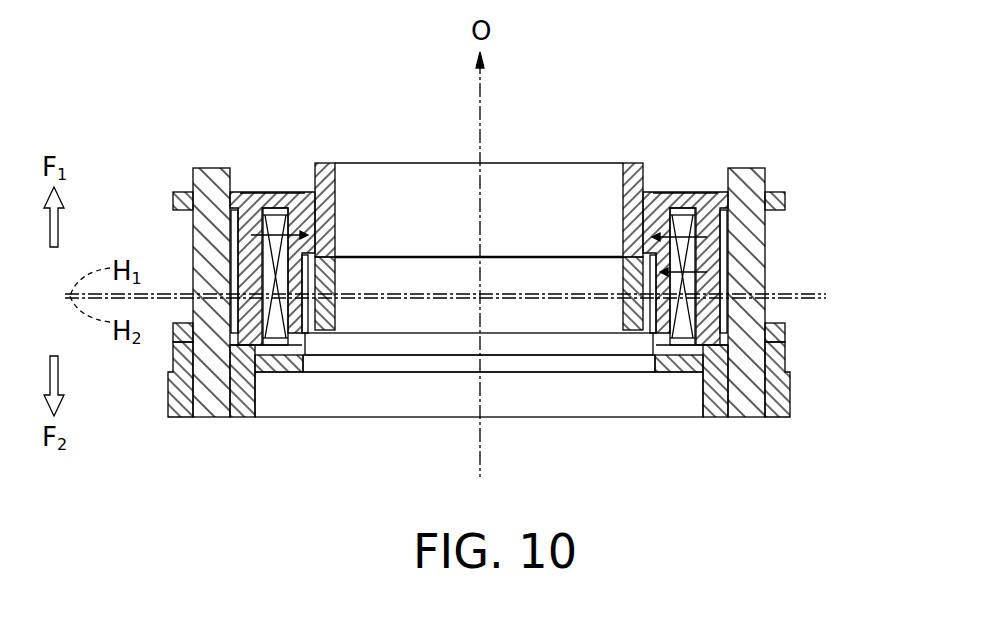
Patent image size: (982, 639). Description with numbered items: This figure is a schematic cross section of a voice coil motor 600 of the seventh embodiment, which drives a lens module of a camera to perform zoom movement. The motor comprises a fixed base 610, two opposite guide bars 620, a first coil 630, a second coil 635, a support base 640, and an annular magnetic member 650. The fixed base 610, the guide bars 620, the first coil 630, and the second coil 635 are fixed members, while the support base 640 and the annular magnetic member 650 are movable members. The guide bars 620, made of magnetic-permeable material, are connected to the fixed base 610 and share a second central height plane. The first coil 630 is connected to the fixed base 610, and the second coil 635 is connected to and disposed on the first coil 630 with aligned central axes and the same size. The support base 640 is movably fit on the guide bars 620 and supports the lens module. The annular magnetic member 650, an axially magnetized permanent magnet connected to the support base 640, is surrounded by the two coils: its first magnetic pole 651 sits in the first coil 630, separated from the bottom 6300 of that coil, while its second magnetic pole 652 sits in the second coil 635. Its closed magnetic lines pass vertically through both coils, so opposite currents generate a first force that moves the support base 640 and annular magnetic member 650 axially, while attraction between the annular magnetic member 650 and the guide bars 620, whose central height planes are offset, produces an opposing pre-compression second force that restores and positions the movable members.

The voice coil motor 600 is at (118, 48).
The fixed base 610 is at (170, 398).
The guide bars 620 is at (202, 178).
The first coil 630 is at (228, 343).
The bottom of the first coil 6300 is at (324, 335).
The second coil 635 is at (250, 233).
The support base 640 is at (328, 163).
The annular magnetic member 650 is at (716, 268).
The first magnetic pole 651 is at (306, 346).
The second magnetic pole 652 is at (306, 192).